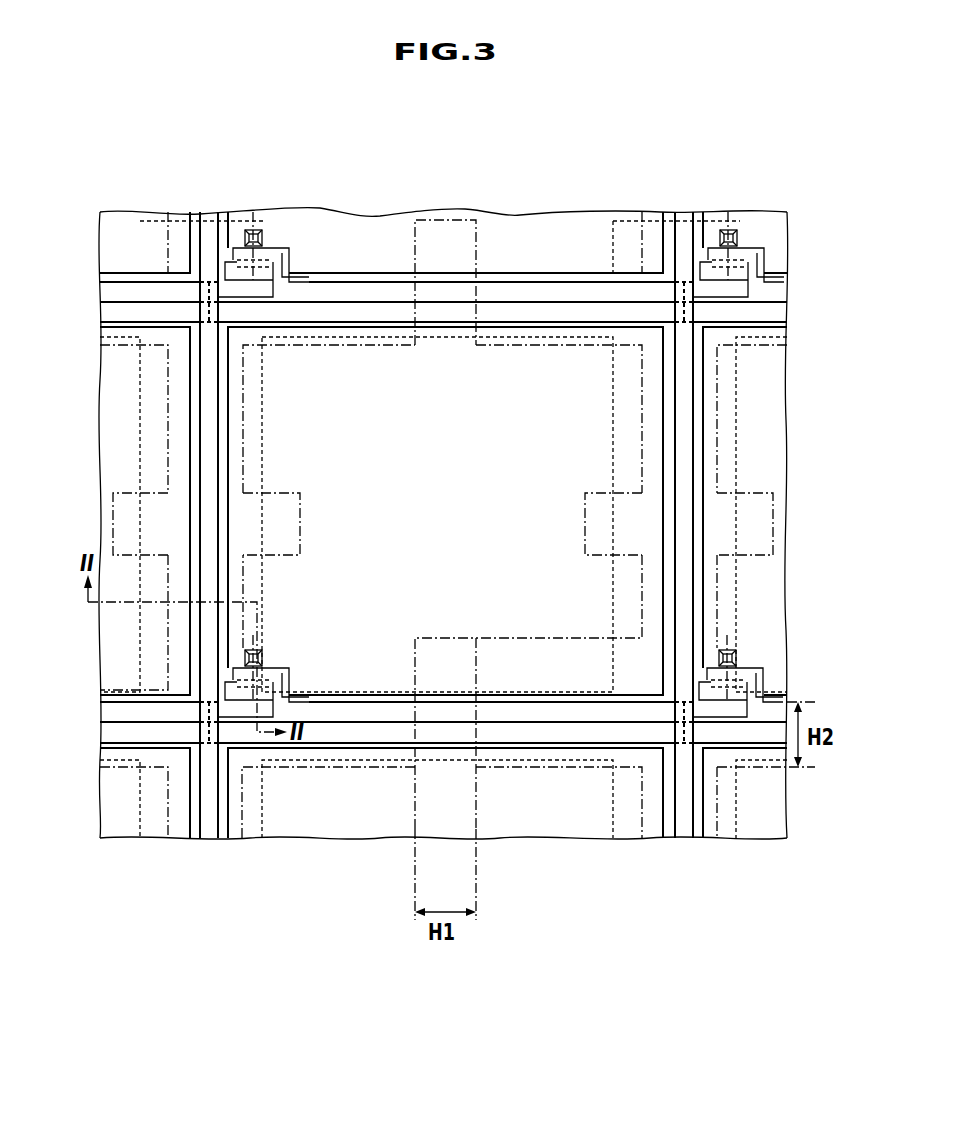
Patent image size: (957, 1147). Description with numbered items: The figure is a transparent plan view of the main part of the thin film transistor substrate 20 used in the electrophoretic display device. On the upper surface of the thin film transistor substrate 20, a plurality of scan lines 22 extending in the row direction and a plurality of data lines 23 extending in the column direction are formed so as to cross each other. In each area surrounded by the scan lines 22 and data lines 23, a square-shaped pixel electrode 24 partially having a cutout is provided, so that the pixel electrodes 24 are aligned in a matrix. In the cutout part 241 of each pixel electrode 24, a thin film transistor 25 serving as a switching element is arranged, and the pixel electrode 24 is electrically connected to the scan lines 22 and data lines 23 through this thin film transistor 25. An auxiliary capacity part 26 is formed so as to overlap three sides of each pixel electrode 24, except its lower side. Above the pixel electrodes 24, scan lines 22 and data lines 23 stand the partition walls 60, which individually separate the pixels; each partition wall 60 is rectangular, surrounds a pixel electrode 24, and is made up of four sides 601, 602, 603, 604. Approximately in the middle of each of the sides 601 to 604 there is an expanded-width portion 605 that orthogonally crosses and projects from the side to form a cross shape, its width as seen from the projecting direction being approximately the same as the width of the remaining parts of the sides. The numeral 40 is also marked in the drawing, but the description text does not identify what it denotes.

The thin film transistor substrate 20 is at (508, 214).
The scan line 22 is at (147, 292).
The data line 23 is at (207, 673).
The pixel electrode 24 is at (436, 505).
The cutout part 241 is at (272, 672).
The thin film transistor 25 is at (212, 690).
The auxiliary capacity part 26 is at (135, 384).
The thin film transistor 40 is at (247, 659).
The partition wall 60 is at (540, 770).
The side 601 is at (718, 412).
The side 602 is at (316, 770).
The side 603 is at (135, 455).
The side 604 is at (319, 258).
The expanded-width portion 605 is at (438, 218).